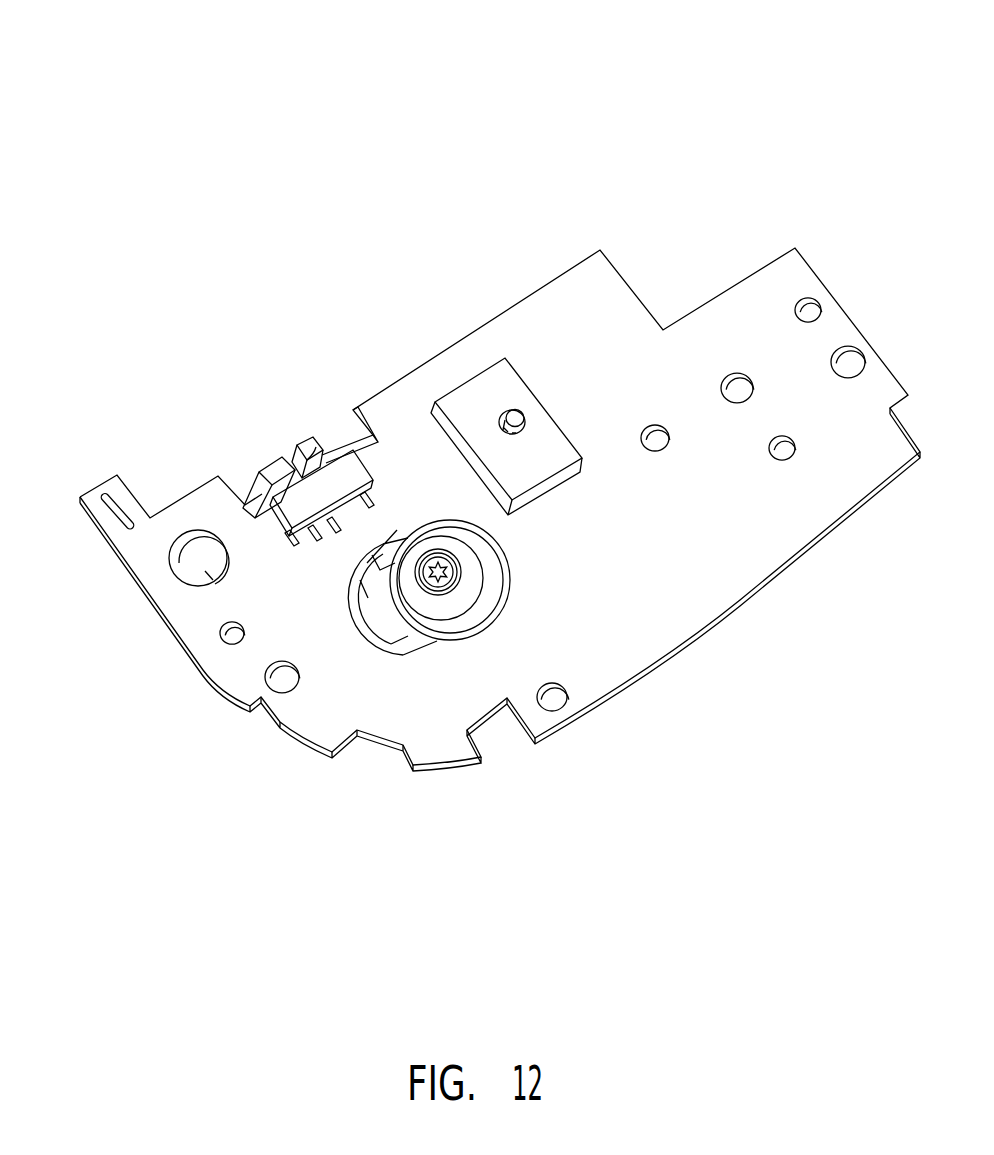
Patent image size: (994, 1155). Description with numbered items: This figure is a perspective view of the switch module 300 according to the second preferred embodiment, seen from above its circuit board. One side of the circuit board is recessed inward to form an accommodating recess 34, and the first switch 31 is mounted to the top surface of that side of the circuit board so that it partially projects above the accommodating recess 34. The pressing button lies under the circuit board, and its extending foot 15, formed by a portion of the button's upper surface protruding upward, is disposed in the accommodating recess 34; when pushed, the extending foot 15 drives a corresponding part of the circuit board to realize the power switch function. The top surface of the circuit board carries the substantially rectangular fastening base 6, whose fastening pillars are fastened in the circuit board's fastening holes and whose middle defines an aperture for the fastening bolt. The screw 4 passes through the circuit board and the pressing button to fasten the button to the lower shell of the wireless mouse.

The switch module 300 is at (92, 44).
The accommodating recess 34 is at (333, 440).
The extending foot 15 is at (289, 463).
The first switch 31 is at (270, 470).
The fastening base 6 is at (510, 393).
The screw 4 is at (438, 613).